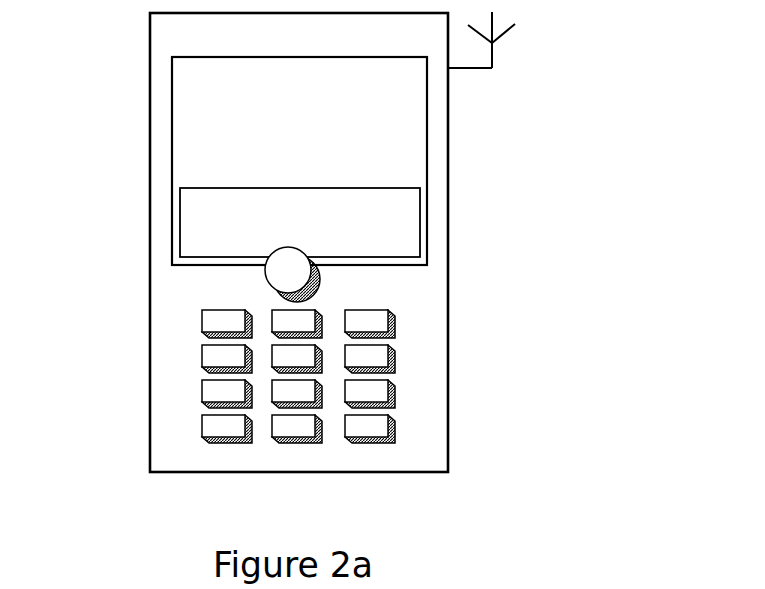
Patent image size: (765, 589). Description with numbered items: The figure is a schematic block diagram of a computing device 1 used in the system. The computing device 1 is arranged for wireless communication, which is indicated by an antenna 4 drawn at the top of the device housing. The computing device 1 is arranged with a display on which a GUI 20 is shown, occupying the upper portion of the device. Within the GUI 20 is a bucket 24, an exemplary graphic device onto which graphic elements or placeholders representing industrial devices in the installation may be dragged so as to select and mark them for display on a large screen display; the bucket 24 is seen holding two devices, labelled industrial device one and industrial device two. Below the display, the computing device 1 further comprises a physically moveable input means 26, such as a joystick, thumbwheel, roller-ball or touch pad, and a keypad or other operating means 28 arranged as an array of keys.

The computing device 1 is at (195, 25).
The antenna 4 is at (503, 53).
The GUI 20 is at (215, 103).
The bucket 24 is at (183, 200).
The physically moveable input means 26 is at (258, 269).
The keypad or other operating means 28 is at (420, 332).